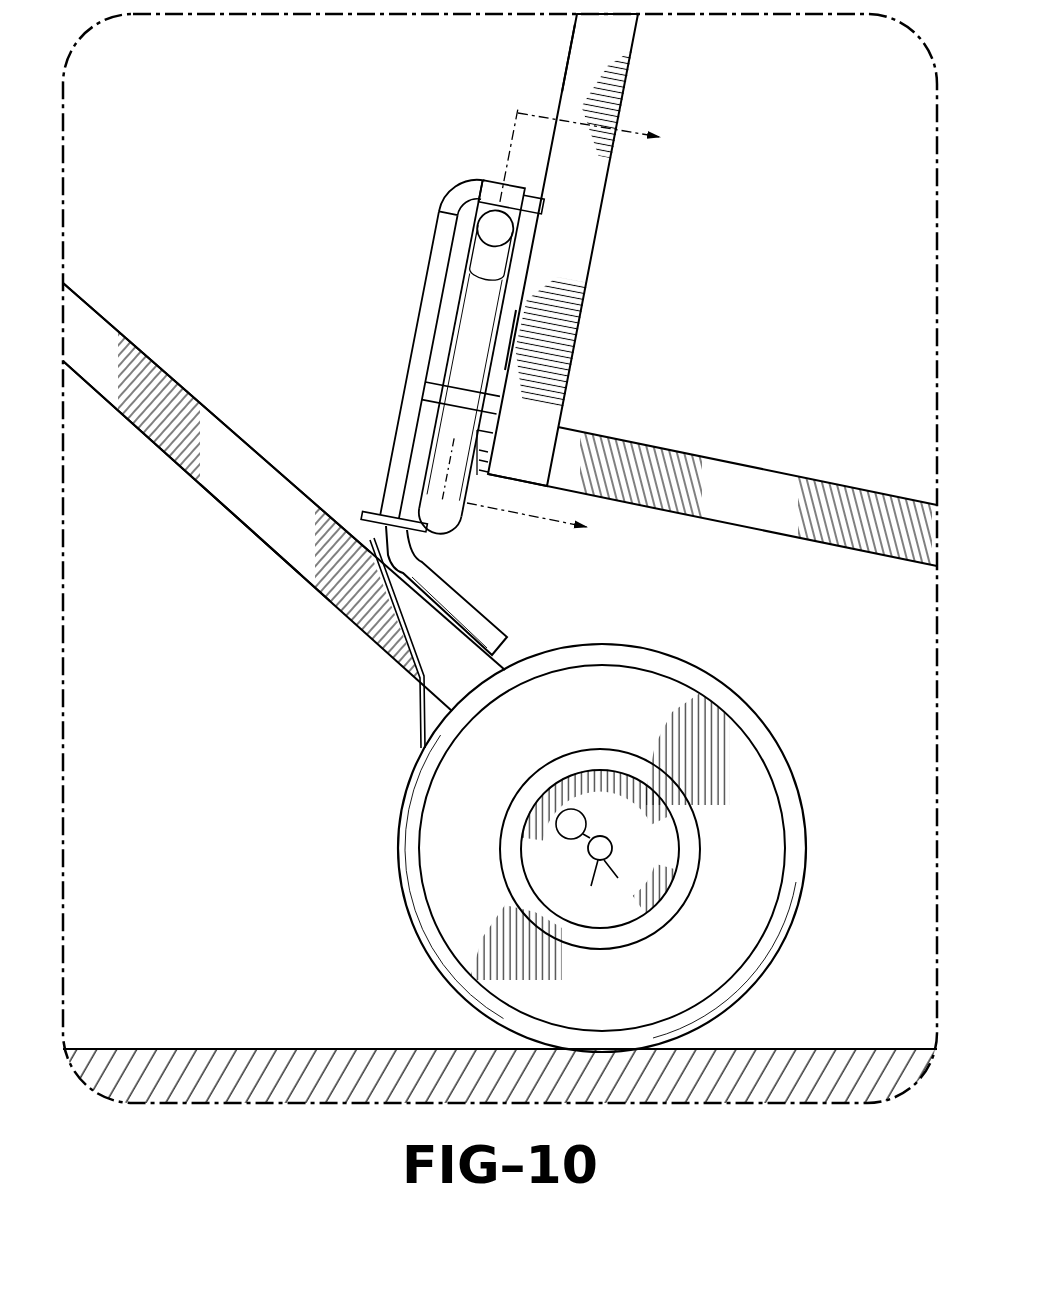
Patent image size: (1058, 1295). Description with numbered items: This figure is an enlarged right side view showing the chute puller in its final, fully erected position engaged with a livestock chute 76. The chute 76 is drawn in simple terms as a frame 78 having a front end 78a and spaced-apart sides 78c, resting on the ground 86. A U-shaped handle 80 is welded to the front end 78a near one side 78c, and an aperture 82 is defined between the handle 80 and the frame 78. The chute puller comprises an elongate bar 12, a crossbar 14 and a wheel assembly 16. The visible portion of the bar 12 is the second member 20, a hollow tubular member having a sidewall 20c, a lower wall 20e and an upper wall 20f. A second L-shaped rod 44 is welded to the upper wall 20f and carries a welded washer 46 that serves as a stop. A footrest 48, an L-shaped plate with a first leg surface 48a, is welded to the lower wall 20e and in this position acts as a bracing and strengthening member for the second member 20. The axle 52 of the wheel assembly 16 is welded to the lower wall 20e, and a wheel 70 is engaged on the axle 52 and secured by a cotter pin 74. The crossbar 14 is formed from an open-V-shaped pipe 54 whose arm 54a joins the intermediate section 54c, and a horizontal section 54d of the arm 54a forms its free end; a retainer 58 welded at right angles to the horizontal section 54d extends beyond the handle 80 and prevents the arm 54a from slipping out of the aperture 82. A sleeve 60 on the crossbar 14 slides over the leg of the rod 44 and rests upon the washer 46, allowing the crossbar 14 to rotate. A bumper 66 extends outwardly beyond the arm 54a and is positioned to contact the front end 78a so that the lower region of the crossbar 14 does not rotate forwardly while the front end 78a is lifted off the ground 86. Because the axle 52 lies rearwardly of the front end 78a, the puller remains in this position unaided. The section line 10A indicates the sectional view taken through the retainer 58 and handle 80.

The section view line 10A is at (593, 325).
The elongate bar 12 is at (284, 497).
The crossbar 14 is at (514, 338).
The wheel assembly 16 is at (644, 842).
The second member 20 is at (303, 583).
The sidewall 20c is at (268, 507).
The lower wall 20e is at (280, 560).
The upper wall 20f is at (273, 463).
The second L-shaped rod 44 is at (451, 592).
The washer 46 is at (379, 514).
The footrest 48 is at (334, 643).
The first leg surface 48a is at (411, 714).
The axle 52 is at (608, 848).
The pipe 54 is at (504, 345).
The arm 54a is at (458, 332).
The intermediate section 54c is at (458, 525).
The horizontal section 54d is at (523, 183).
The retainer 58 is at (502, 180).
The sleeve 60 is at (400, 345).
The bumper 66 is at (484, 452).
The wheel 70 is at (692, 673).
The cotter pin 74 is at (586, 822).
The livestock chute 76 is at (562, 54).
The frame 78 is at (712, 486).
The front end 78a is at (563, 89).
The side 78c is at (781, 469).
The U-shaped handle 80 is at (455, 249).
The aperture 82 is at (462, 233).
The ground 86 is at (295, 1047).